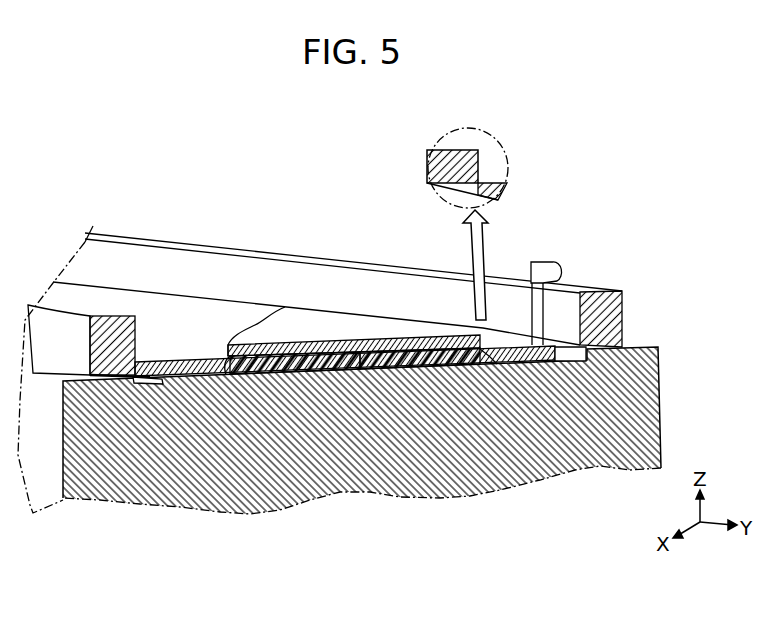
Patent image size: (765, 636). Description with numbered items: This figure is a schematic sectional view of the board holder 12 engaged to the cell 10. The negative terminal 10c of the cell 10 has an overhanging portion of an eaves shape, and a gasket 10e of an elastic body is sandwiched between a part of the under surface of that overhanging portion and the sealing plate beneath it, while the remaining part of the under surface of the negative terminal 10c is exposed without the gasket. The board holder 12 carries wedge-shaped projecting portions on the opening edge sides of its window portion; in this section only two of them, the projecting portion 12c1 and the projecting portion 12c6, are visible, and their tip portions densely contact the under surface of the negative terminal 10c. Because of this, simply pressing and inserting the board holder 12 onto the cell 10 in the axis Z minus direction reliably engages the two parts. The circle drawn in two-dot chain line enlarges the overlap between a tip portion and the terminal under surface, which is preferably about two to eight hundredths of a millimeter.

The cell 10 is at (640, 348).
The negative terminal 10c is at (302, 327).
The gasket 10e is at (280, 345).
The board holder 12 is at (568, 290).
The projecting portion 12c1 is at (223, 357).
The projecting portion 12c6 is at (497, 362).